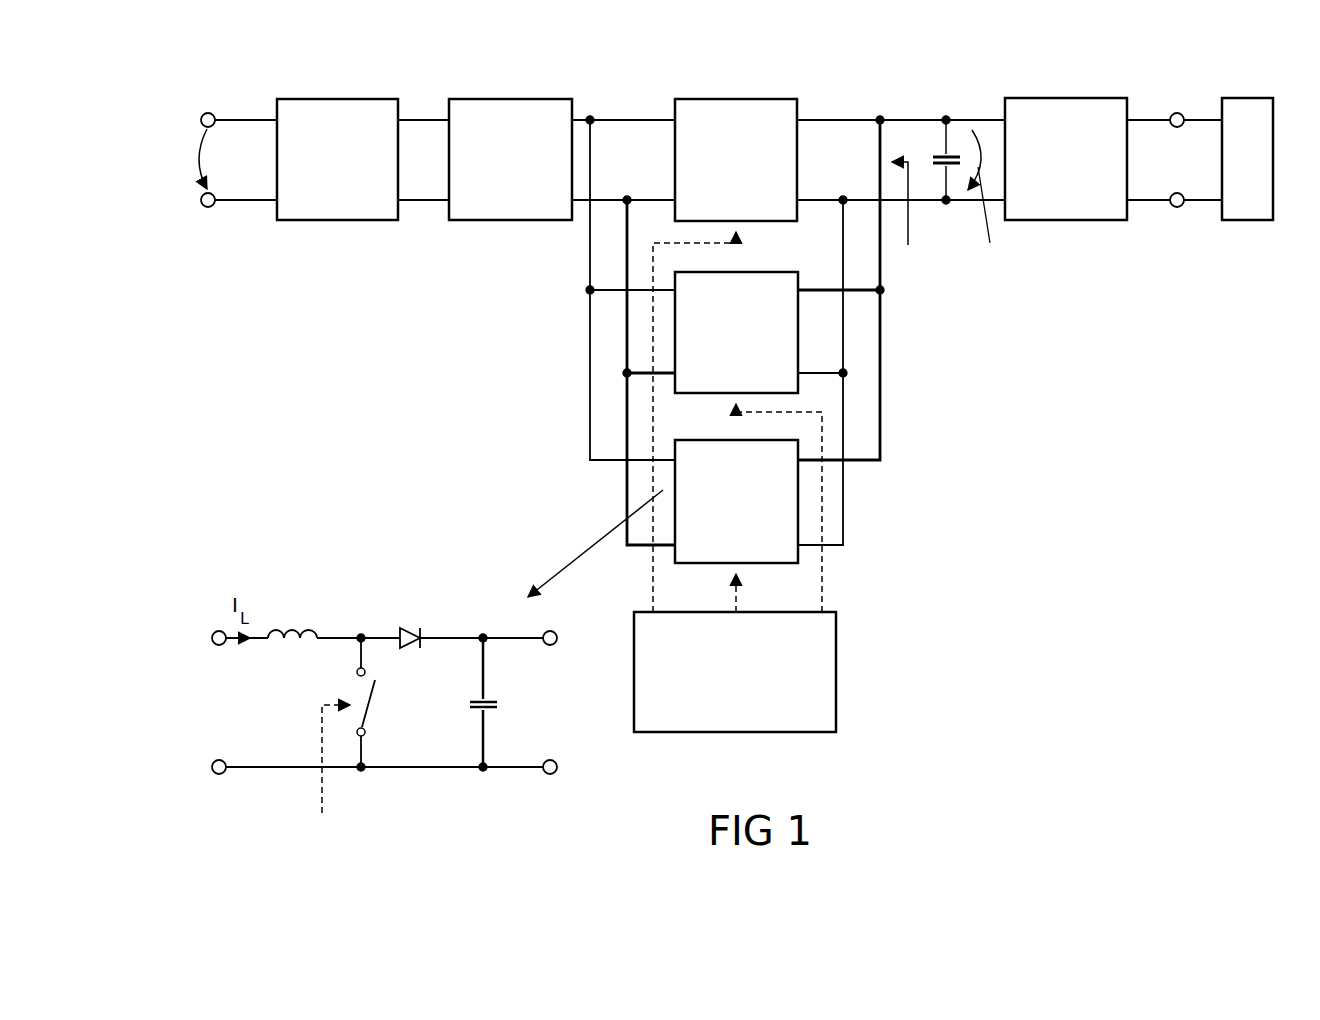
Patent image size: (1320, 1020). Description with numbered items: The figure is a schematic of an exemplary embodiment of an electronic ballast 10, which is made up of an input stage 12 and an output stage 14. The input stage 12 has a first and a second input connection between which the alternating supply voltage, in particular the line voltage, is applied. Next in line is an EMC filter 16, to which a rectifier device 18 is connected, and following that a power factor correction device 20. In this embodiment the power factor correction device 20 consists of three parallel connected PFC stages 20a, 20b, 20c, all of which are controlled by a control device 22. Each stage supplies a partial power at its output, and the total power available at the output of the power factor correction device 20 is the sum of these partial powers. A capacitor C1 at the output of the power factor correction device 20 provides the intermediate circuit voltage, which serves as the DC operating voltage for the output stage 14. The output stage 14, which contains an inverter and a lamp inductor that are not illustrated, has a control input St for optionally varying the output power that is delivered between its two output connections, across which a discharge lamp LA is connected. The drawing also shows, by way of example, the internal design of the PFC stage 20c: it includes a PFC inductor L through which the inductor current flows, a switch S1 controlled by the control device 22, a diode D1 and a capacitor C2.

The electronic ballast 10 is at (699, 370).
The input stage 12 is at (928, 68).
The output stage 14 is at (1190, 67).
The EMC filter 16 is at (337, 159).
The rectifier device 18 is at (510, 159).
The power factor correction device 20 is at (744, 314).
The first PFC stage 20a is at (766, 160).
The second PFC stage 20b is at (751, 332).
The third PFC stage 20c is at (789, 501).
The control device 22 is at (735, 482).
The capacitor C1 is at (937, 160).
The control input St is at (1066, 159).
The discharge lamp LA is at (1247, 159).
The PFC inductor L is at (292, 618).
The diode D1 is at (414, 622).
The switch S1 is at (362, 727).
The capacitor C2 is at (500, 702).